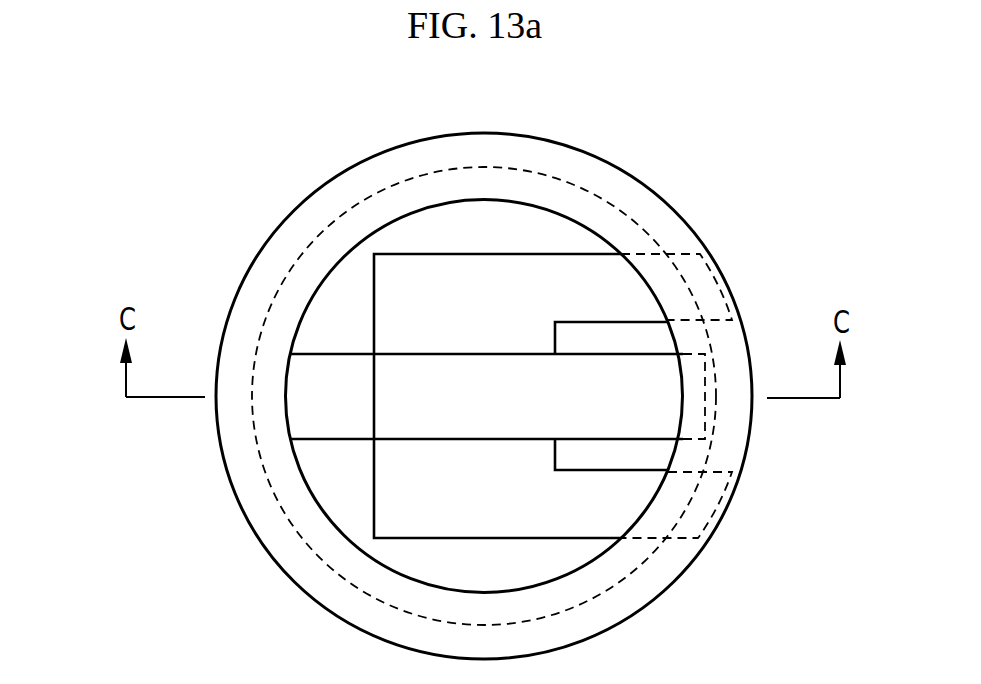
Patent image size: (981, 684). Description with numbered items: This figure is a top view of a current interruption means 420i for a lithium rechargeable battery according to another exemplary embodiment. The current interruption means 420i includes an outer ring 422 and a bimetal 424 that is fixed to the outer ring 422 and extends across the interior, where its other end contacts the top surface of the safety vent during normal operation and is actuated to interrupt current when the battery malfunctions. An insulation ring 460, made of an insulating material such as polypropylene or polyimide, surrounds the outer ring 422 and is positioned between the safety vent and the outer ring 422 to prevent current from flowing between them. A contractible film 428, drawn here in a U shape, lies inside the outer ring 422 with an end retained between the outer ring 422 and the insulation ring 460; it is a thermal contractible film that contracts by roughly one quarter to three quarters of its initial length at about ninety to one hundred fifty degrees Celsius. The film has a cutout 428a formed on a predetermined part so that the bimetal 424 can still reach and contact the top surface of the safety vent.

The current interruption means 420i is at (478, 418).
The outer ring 422 is at (272, 424).
The bimetal 424 is at (332, 430).
The contractible film 428 is at (392, 488).
The cutout 428a is at (630, 455).
The insulation ring 460 is at (668, 565).